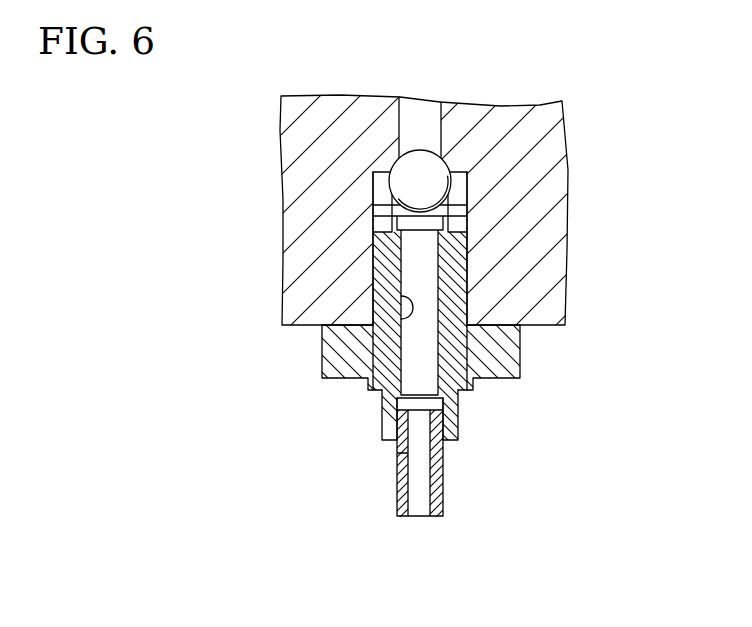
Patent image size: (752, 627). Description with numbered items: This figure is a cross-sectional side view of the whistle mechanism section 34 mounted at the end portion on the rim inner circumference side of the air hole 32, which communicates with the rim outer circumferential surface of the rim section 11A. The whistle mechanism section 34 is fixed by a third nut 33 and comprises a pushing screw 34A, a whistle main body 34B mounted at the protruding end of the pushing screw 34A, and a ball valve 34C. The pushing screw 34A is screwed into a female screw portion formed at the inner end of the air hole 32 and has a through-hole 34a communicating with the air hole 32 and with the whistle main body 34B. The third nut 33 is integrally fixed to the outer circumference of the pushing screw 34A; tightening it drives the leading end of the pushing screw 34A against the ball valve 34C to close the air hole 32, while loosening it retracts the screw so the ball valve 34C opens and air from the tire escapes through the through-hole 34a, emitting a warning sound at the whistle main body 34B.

The rim section 11A is at (556, 184).
The air hole 32 is at (441, 121).
The third nut 33 is at (520, 353).
The whistle mechanism section 34 is at (363, 393).
The through-hole 34a is at (407, 305).
The pushing screw 34A is at (458, 415).
The whistle main body 34B is at (443, 476).
The ball valve 34C is at (448, 163).